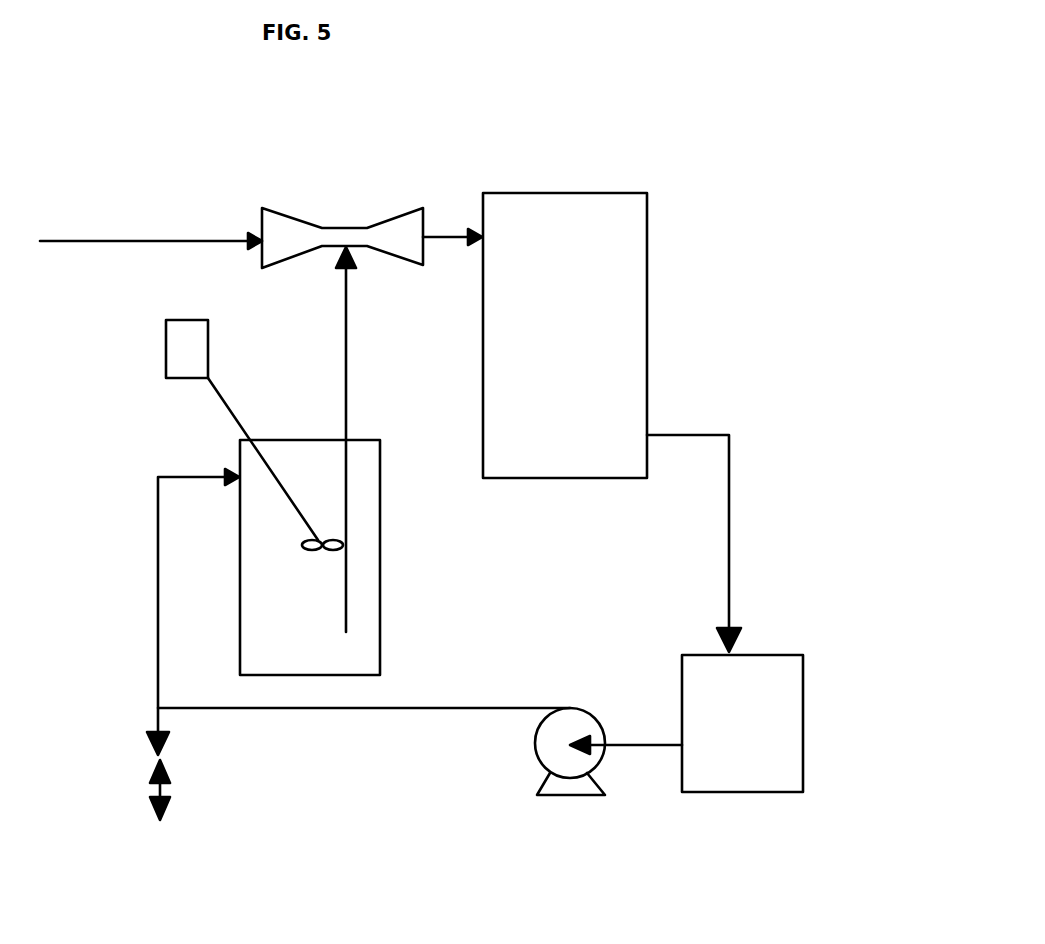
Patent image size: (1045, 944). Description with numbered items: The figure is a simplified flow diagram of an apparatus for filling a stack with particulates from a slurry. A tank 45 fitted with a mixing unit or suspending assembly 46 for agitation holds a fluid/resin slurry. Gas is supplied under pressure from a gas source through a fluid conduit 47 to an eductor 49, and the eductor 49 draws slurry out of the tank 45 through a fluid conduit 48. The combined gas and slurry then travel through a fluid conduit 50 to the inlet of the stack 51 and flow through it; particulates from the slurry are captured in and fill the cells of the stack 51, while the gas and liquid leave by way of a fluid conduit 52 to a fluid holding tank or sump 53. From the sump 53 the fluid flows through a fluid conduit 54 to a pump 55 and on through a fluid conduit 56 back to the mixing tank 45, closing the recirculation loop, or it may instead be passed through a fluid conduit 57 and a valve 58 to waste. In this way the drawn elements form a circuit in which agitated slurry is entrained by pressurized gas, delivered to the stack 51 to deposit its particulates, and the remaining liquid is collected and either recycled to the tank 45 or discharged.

The tank 45 is at (240, 576).
The mixing unit or suspending assembly 46 is at (222, 398).
The fluid conduit 47 is at (180, 242).
The fluid conduit 48 is at (345, 308).
The eductor 49 is at (375, 240).
The fluid conduit 50 is at (447, 237).
The stack 51 is at (497, 447).
The fluid conduit 52 is at (731, 600).
The fluid holding tank or sump 53 is at (778, 743).
The fluid conduit 54 is at (620, 747).
The pump 55 is at (558, 743).
The fluid conduit 56 is at (158, 612).
The fluid conduit 57 is at (158, 730).
The valve 58 is at (163, 750).